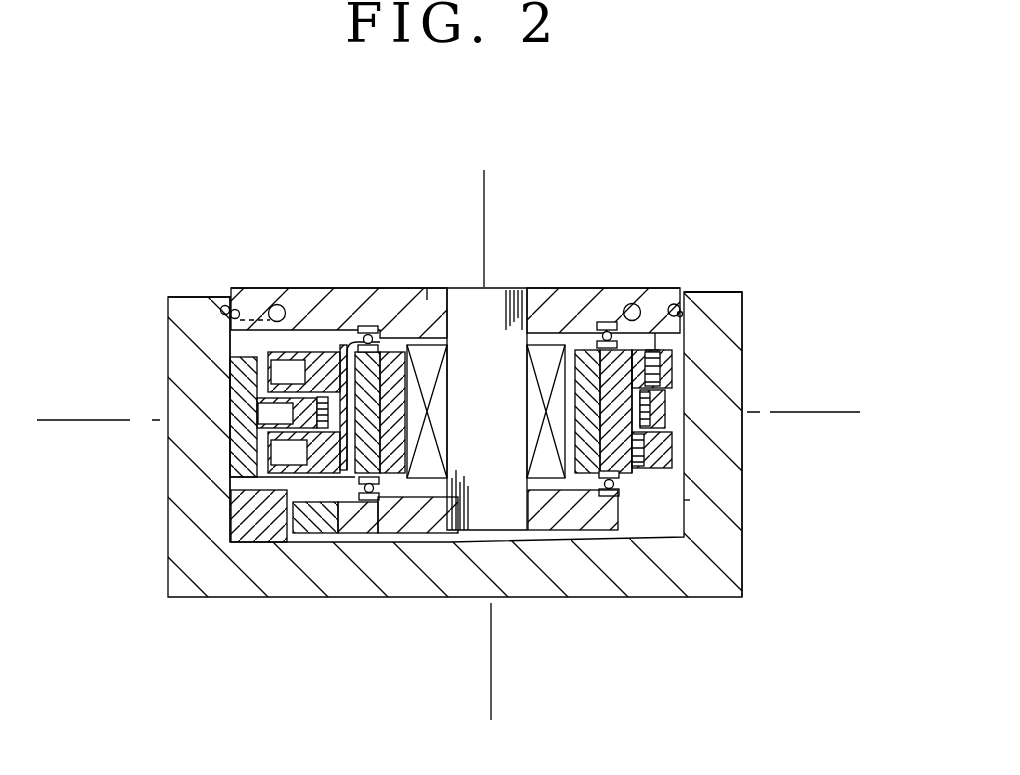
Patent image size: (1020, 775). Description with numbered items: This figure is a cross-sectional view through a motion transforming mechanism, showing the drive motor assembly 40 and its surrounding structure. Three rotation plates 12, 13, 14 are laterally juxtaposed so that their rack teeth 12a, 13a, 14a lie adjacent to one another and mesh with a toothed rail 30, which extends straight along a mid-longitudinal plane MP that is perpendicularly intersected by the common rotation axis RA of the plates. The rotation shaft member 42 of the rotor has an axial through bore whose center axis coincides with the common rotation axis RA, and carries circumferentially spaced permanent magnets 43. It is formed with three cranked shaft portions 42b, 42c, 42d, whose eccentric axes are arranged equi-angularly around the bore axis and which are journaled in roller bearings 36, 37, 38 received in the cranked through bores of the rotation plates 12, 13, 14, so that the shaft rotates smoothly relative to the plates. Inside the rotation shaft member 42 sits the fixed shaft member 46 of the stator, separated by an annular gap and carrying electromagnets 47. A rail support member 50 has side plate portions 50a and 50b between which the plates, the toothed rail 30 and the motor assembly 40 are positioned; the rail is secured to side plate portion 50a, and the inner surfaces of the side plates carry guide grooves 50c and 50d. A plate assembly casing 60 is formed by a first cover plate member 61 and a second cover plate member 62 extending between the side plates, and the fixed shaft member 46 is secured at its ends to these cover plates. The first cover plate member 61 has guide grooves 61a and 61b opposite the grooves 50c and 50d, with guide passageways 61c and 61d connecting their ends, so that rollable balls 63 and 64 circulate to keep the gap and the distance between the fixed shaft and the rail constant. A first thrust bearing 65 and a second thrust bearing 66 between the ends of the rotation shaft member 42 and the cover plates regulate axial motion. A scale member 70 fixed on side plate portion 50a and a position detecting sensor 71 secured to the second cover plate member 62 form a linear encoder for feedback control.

The rotation plate 12 is at (672, 358).
The rotation plate 13 is at (665, 410).
The rotation plate 14 is at (672, 452).
The teeth 12a is at (270, 368).
The teeth 13a is at (260, 414).
The teeth 14a is at (272, 470).
The toothed rail 30 is at (245, 438).
The roller bearing 36 is at (346, 350).
The roller bearing 37 is at (362, 326).
The roller bearing 38 is at (365, 500).
The drive motor assembly 40 is at (612, 476).
The rotation shaft member 42 is at (650, 466).
The cranked shaft portion 42b is at (645, 350).
The cranked shaft portion 42c is at (655, 348).
The cranked shaft portion 42d is at (690, 500).
The permanent magnets 43 is at (588, 476).
The fixed shaft member 46 is at (507, 300).
The electromagnets 47 is at (540, 343).
The rail support member 50 is at (526, 572).
The side plate portion 50a is at (205, 325).
The side plate portion 50b is at (740, 312).
The guide groove 50c is at (222, 305).
The guide groove 50d is at (712, 292).
The plate assembly casing 60 is at (386, 290).
The first cover plate member 61 is at (402, 288).
The guide groove 61a is at (231, 298).
The guide groove 61b is at (679, 304).
The guide passageway 61c is at (254, 292).
The guide passageway 61d is at (650, 350).
The second cover plate member 62 is at (395, 530).
The rollable balls 63 is at (277, 304).
The rollable balls 64 is at (626, 304).
The first thrust bearing 65 is at (428, 290).
The second thrust bearing 66 is at (430, 533).
The scale member 70 is at (250, 545).
The position detecting sensor 71 is at (292, 535).
The mid-longitudinal plane MP is at (70, 418).
The common rotation axis RA is at (494, 155).